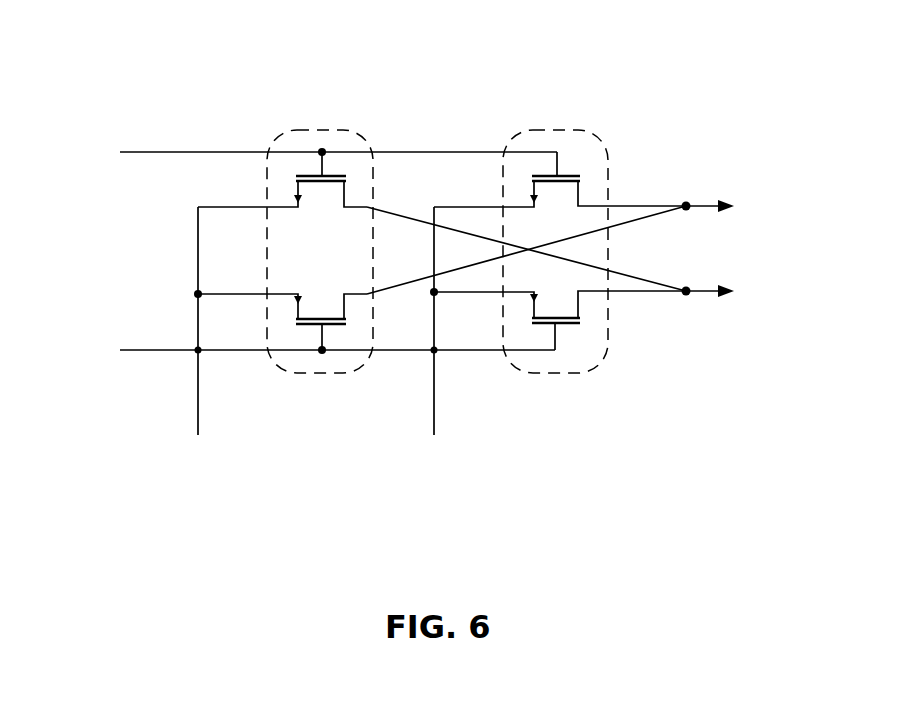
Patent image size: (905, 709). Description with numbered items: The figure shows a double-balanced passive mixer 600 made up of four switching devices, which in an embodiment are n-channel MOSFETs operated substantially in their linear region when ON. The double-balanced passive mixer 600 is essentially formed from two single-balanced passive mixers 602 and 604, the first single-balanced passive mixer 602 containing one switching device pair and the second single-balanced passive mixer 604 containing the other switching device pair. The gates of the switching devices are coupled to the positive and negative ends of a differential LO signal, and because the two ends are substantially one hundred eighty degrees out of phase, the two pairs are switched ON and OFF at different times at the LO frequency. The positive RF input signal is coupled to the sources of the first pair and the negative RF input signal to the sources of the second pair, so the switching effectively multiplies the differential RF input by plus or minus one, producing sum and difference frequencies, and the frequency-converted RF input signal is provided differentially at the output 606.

The double-balanced passive mixer 600 is at (600, 540).
The single-balanced passive mixer 602 is at (323, 130).
The single-balanced passive mixer 604 is at (557, 130).
The output 606 is at (740, 204).